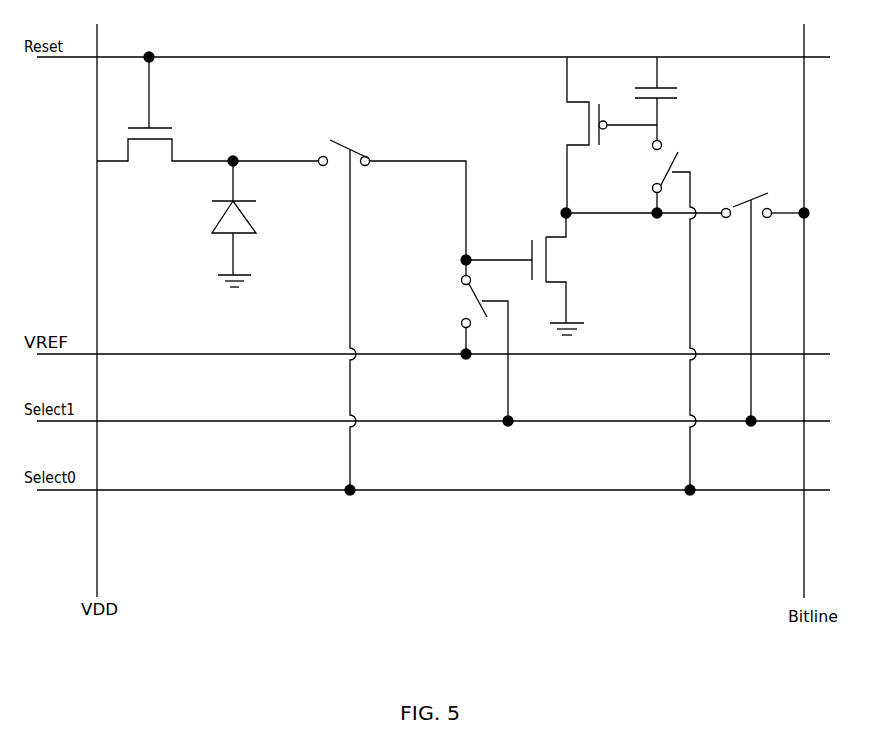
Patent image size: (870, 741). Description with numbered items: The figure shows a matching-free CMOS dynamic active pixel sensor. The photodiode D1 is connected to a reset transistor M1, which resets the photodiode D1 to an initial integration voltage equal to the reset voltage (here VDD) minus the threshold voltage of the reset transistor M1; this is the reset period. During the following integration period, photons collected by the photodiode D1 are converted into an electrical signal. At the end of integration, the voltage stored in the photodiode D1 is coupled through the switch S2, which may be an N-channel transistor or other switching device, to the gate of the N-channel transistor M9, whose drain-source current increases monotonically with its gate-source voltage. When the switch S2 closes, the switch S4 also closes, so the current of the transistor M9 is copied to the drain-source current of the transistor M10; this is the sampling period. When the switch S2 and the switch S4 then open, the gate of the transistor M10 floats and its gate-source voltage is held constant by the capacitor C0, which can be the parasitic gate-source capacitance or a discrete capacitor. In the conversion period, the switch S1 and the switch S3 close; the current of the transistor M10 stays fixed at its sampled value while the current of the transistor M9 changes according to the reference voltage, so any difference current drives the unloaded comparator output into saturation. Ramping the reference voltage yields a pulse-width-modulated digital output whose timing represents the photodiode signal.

The reset transistor M1 is at (207, 109).
The photodiode D1 is at (247, 221).
The switch S2 is at (344, 311).
The switch S3 is at (487, 340).
The N-channel transistor M9 is at (525, 271).
The transistor M10 is at (605, 135).
The capacitor C0 is at (669, 98).
The switch S4 is at (677, 318).
The switch S1 is at (766, 303).